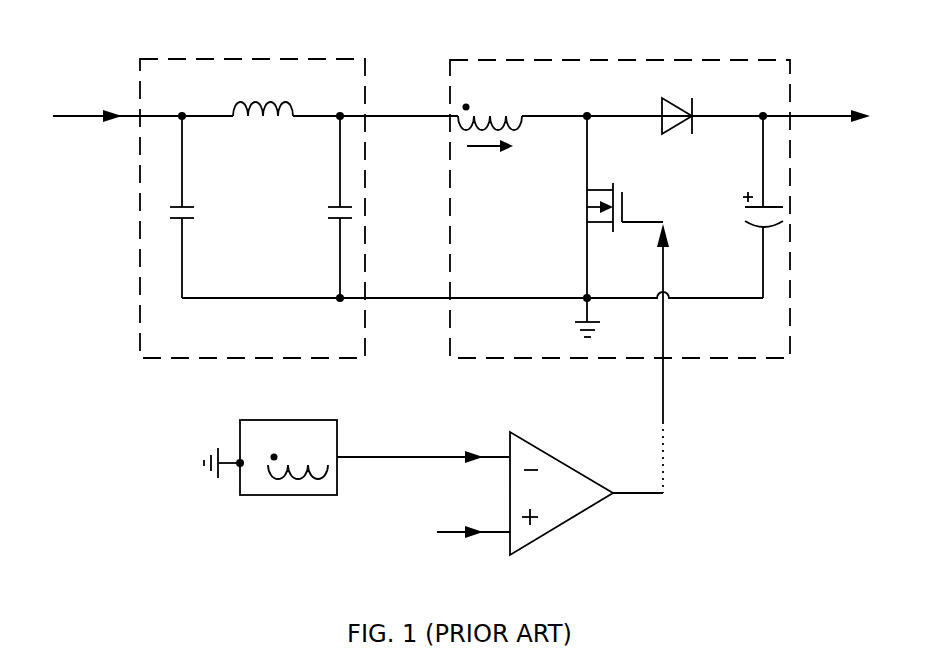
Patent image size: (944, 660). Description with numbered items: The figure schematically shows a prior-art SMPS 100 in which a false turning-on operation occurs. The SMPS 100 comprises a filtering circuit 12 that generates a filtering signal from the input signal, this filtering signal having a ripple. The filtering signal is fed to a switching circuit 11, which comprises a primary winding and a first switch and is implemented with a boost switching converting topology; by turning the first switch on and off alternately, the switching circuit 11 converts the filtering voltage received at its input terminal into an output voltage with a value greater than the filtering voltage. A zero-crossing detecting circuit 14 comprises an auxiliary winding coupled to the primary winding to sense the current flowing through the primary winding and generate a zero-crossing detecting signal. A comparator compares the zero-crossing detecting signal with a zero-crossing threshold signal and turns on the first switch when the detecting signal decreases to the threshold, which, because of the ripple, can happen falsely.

The SMPS 100 is at (461, 299).
The filtering circuit 12 is at (272, 61).
The switching circuit 11 is at (599, 61).
The zero-crossing detecting circuit 14 is at (268, 496).